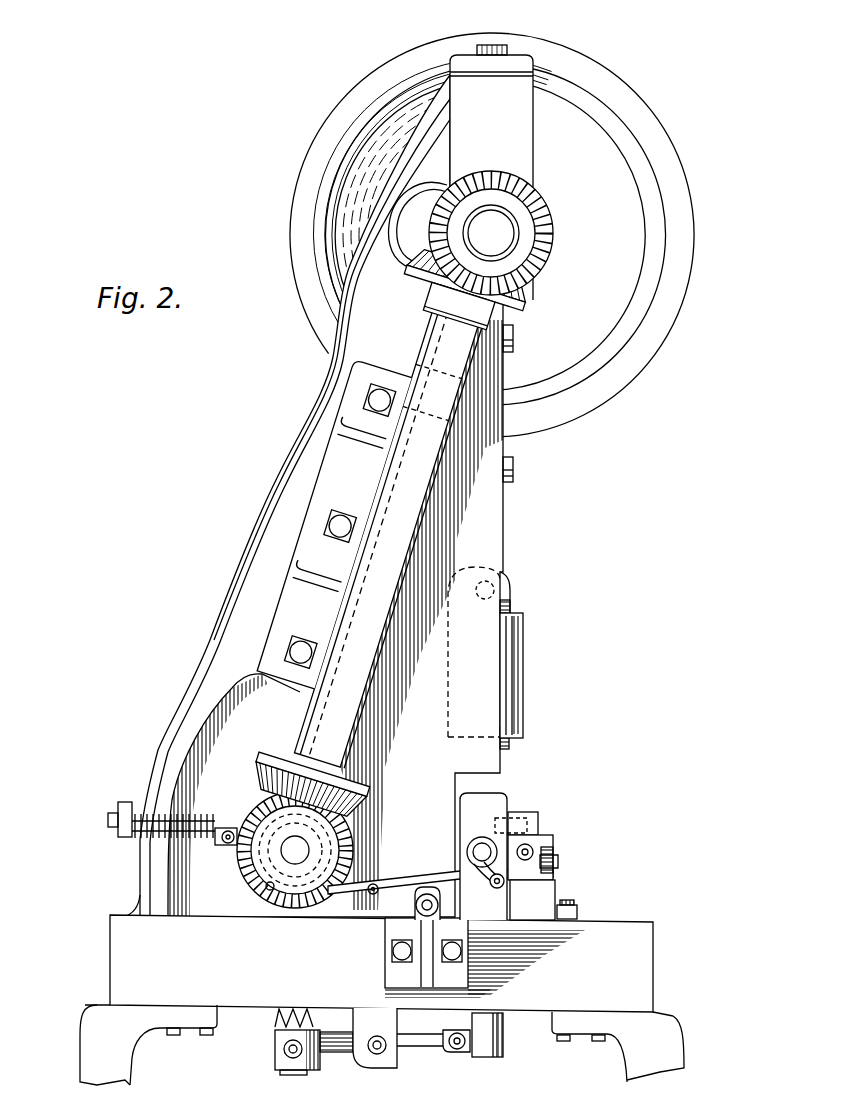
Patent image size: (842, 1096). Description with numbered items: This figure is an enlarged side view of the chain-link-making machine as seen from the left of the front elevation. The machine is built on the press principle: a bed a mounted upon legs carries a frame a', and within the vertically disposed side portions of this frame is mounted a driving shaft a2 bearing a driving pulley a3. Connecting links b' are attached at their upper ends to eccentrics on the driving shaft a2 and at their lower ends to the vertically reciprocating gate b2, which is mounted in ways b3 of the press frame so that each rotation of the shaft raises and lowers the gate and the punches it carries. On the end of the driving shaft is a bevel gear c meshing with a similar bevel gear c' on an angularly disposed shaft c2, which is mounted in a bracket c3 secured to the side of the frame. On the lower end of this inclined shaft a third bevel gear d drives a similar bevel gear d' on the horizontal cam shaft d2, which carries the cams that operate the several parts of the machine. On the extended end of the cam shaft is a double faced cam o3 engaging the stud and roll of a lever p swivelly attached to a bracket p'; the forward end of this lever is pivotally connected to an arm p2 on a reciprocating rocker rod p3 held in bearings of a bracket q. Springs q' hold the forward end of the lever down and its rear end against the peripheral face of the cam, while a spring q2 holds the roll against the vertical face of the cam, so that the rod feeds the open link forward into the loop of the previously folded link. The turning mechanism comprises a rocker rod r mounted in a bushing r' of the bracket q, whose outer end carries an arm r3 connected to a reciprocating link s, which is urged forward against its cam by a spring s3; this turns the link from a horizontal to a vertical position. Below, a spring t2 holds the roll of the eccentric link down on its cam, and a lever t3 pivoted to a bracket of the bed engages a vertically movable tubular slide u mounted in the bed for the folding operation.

The bed a is at (382, 1000).
The frame a' is at (313, 496).
The driving shaft a2 is at (491, 233).
The driving pulley a3 is at (492, 235).
The connecting links b' is at (443, 477).
The vertically reciprocating gate b2 is at (515, 682).
The ways b3 is at (485, 635).
The bevel gear c is at (502, 233).
The bevel gear c' is at (489, 278).
The angularly disposed shaft c2 is at (373, 583).
The bracket c3 is at (334, 524).
The bevel gear d is at (308, 777).
The bevel gear d' is at (280, 850).
The cam shaft d2 is at (295, 850).
The double faced cam o3 is at (267, 890).
The lever p is at (420, 906).
The bracket p' is at (439, 958).
The arm p2 is at (550, 860).
The reciprocating rocker rod p3 is at (528, 850).
The bracket q is at (508, 852).
The springs q' is at (543, 900).
The spring q2 is at (373, 895).
The rocker rod r is at (480, 840).
The bushing r' is at (463, 861).
The arm r3 is at (491, 896).
The reciprocating link s is at (440, 871).
The spring s3 is at (196, 825).
The spring t2 is at (280, 1020).
The lever t3 is at (428, 1052).
The tubular slide u is at (503, 1037).